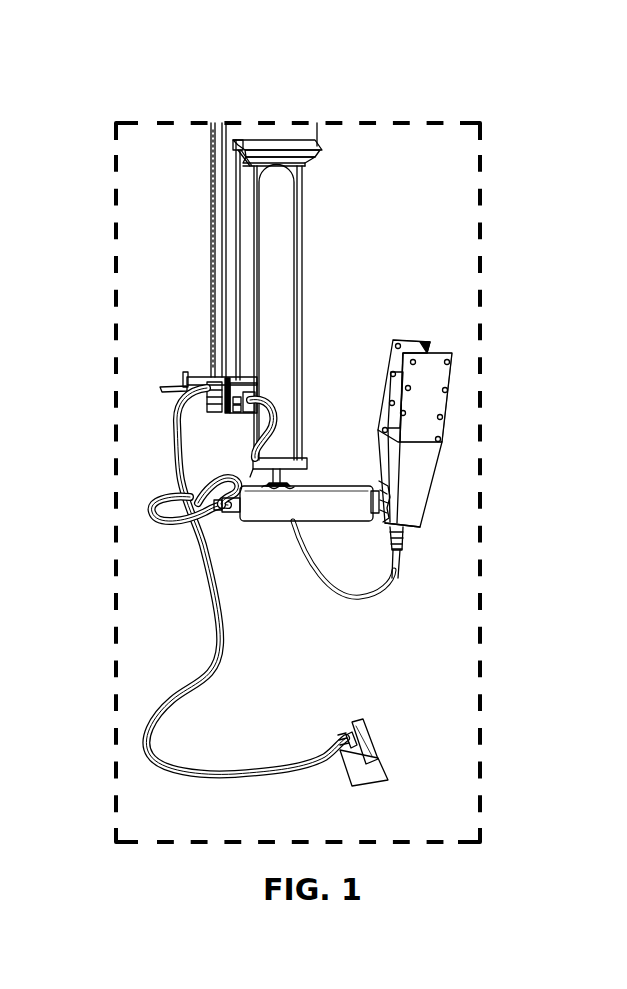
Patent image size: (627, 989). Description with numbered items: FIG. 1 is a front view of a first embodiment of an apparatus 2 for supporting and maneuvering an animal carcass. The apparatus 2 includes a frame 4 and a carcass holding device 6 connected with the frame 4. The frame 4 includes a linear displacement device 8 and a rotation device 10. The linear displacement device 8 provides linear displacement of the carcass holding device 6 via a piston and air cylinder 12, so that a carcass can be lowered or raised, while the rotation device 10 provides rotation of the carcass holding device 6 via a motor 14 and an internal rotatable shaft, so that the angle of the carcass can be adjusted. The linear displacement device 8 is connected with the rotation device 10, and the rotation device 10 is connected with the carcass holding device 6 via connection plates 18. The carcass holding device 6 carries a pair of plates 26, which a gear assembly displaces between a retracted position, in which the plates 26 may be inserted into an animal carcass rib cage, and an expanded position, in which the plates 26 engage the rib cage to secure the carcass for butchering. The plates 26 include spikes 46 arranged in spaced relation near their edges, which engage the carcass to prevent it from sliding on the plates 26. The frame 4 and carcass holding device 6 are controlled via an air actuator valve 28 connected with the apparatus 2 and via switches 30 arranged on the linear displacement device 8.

The apparatus 2 is at (407, 176).
The frame 4 is at (180, 279).
The carcass holding device 6 is at (431, 318).
The linear displacement device 8 is at (258, 228).
The rotation device 10 is at (263, 518).
The piston and air cylinder 12 is at (280, 268).
The motor 14 is at (225, 500).
The connection plates 18 is at (240, 487).
The plates 26 is at (413, 350).
The air actuator valve 28 is at (377, 750).
The switches 30 is at (210, 405).
The spikes 46 is at (406, 412).